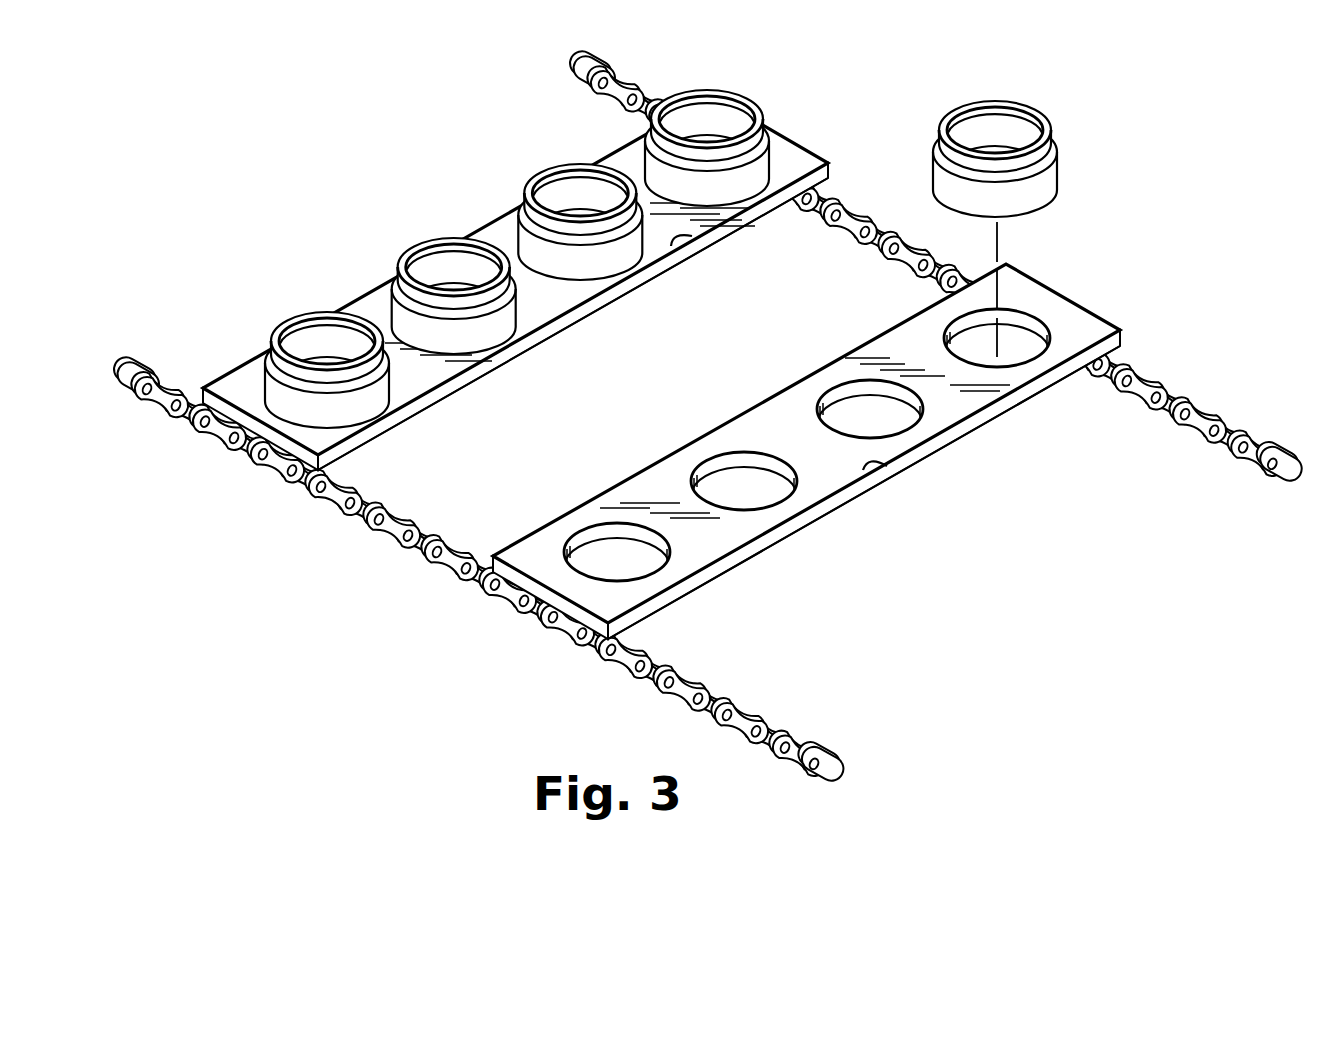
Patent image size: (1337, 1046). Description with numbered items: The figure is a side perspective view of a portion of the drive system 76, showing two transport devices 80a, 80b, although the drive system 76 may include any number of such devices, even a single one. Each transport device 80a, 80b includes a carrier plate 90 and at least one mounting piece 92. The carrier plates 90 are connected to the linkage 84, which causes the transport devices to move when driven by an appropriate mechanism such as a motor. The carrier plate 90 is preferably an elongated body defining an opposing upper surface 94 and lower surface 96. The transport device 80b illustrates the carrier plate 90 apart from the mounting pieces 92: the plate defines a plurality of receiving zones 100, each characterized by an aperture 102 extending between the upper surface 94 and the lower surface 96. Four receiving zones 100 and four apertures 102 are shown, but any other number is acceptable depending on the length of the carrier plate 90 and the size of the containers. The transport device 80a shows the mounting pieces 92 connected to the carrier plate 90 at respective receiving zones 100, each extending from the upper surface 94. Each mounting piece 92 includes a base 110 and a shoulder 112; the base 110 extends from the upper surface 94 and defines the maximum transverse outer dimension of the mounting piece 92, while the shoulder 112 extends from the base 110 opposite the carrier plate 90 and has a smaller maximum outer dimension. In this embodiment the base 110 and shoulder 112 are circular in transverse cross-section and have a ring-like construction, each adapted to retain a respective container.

The drive system 76 is at (383, 95).
The transport device 80a is at (356, 274).
The transport device 80b is at (828, 570).
The linkage 84 is at (1212, 376).
The carrier plate 90 is at (521, 365).
The mounting piece 92 is at (709, 248).
The upper surface 94 is at (692, 236).
The lower surface 96 is at (633, 292).
The receiving zone 100 is at (637, 507).
The aperture 102 is at (838, 388).
The base 110 is at (758, 173).
The shoulder 112 is at (752, 147).